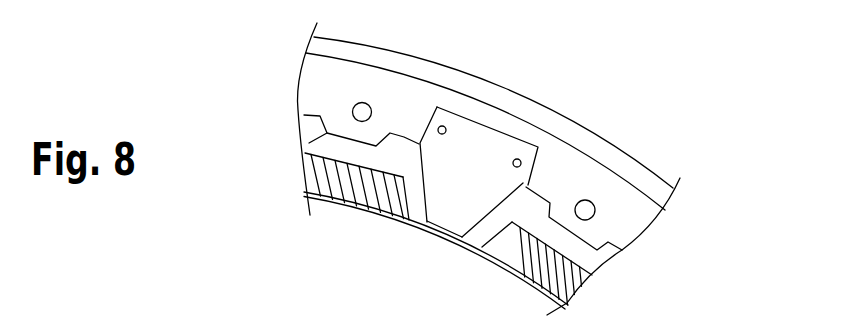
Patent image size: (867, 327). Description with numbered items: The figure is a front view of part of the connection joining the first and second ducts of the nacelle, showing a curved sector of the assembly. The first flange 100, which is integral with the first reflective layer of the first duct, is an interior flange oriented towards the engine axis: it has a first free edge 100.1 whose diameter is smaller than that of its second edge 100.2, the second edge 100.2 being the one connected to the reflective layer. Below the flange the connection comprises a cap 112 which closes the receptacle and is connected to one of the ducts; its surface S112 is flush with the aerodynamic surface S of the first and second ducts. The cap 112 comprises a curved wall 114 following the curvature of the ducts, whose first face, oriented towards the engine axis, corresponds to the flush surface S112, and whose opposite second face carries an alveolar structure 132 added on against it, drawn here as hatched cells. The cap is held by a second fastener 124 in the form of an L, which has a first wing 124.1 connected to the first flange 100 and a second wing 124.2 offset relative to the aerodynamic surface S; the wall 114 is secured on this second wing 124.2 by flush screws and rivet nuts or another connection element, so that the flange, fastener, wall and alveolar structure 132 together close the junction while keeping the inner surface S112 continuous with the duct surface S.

The first flange 100 is at (418, 100).
The first free edge 100.1 is at (309, 143).
The second edge 100.2 is at (338, 52).
The cap 112 is at (402, 225).
The curved wall 114 is at (303, 193).
The second fastener 124 is at (468, 158).
The first wing 124.1 is at (502, 185).
The second wing 124.2 is at (440, 231).
The alveolar structure 132 is at (322, 178).
The aerodynamic surface S is at (506, 276).
The surface of the cap S112 is at (375, 216).